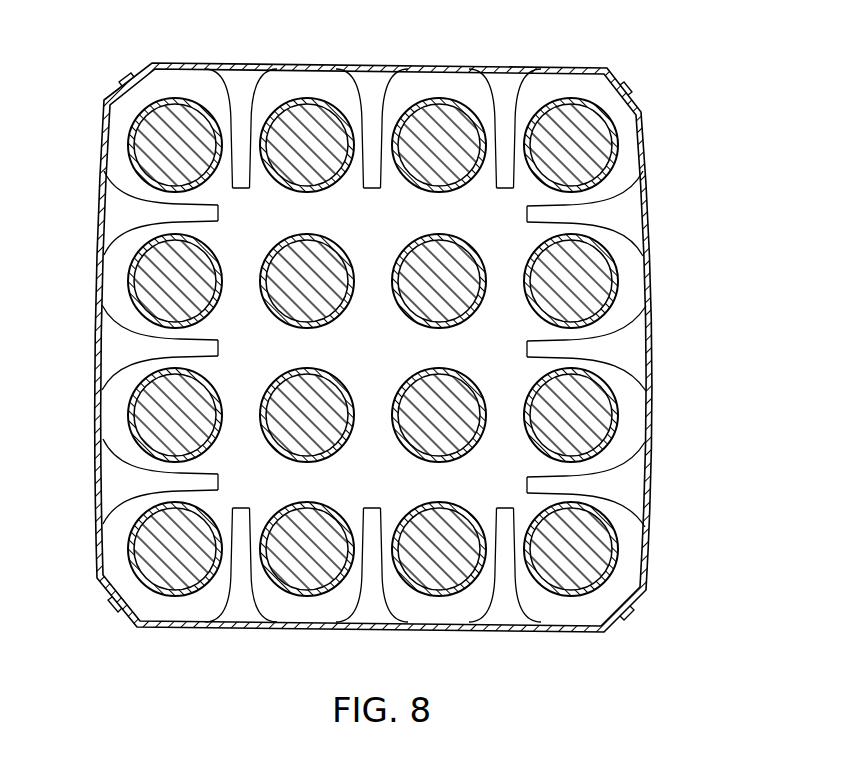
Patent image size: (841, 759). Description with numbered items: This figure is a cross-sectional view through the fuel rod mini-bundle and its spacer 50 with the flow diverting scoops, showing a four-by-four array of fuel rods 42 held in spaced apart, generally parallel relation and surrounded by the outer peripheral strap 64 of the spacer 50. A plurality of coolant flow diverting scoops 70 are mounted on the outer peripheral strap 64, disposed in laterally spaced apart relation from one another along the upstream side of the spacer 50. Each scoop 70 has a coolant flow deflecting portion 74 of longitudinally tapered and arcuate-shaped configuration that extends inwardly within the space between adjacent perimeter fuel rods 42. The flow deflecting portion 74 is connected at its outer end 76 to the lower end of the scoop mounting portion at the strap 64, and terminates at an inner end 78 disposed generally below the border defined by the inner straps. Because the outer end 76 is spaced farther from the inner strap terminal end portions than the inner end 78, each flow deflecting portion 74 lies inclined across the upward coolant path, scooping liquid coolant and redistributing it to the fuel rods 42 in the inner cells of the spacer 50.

The spacer 50 is at (624, 72).
The outer peripheral strap 64 is at (98, 422).
The fuel rod 42 is at (425, 525).
The coolant flow diverting scoop 70 is at (377, 347).
The coolant flow deflecting portion 74 is at (505, 566).
The outer end 76 is at (511, 607).
The inner end 78 is at (508, 508).